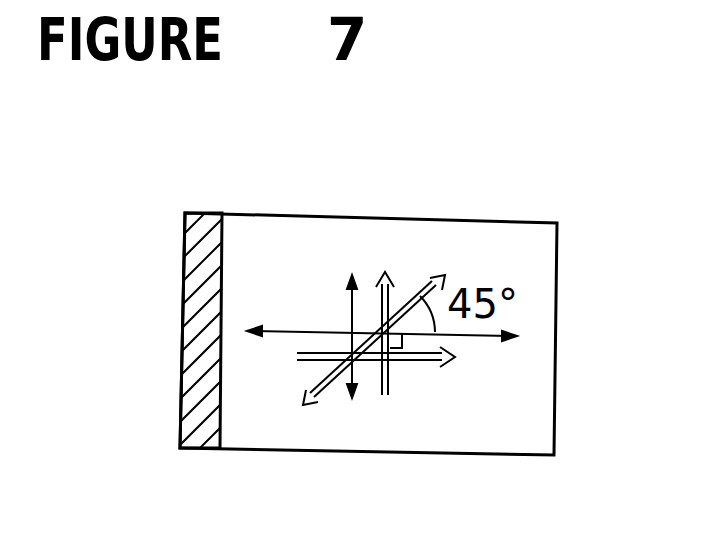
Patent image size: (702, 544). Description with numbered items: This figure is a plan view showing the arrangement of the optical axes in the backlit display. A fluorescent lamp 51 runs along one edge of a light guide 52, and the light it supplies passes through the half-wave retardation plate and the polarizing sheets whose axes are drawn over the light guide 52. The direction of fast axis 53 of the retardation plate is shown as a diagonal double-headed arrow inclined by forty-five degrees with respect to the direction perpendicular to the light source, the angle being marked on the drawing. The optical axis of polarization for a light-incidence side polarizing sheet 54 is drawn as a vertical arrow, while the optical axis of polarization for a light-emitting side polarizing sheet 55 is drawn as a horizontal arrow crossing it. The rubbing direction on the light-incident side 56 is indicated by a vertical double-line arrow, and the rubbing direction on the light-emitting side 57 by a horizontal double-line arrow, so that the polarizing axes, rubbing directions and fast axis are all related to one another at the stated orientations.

The fluorescent lamp 51 is at (185, 419).
The light guide 52 is at (267, 423).
The direction of fast axis 53 is at (313, 390).
The optical axis of polarization for a light-incidence side polarizing sheet 54 is at (352, 308).
The optical axis of polarization for a light-emitting side polarizing sheet 55 is at (497, 335).
The rubbing direction on the light-incident side 56 is at (388, 301).
The rubbing direction on the light-emitting side 57 is at (423, 365).